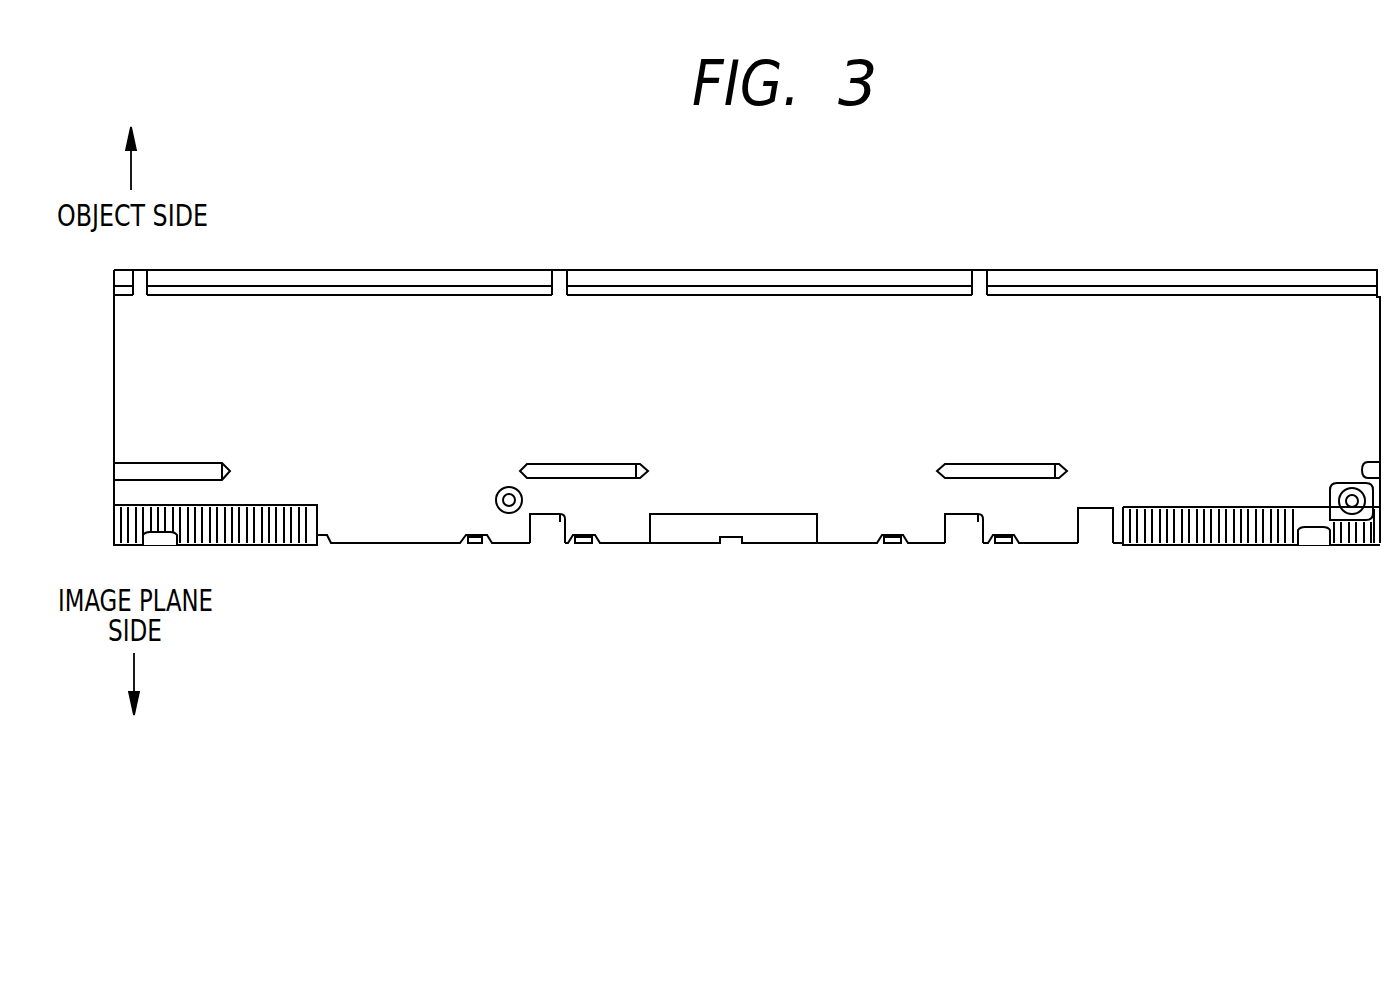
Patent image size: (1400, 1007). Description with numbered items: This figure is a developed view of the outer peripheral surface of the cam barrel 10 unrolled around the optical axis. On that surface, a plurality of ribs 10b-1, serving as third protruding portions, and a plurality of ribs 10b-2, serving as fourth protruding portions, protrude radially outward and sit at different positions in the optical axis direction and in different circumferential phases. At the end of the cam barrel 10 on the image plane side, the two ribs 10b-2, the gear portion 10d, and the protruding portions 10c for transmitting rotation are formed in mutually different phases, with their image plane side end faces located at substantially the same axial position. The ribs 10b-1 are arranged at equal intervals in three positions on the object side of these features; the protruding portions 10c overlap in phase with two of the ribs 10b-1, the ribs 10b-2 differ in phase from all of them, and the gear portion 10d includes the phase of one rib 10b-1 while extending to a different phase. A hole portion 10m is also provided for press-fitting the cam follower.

The cam barrel 10 is at (1253, 317).
The ribs 10b-1 is at (180, 472).
The ribs 10b-2 is at (758, 525).
The protruding portions for transmitting rotation 10c is at (545, 525).
The gear portion 10d is at (230, 517).
The hole portion 10m is at (505, 510).